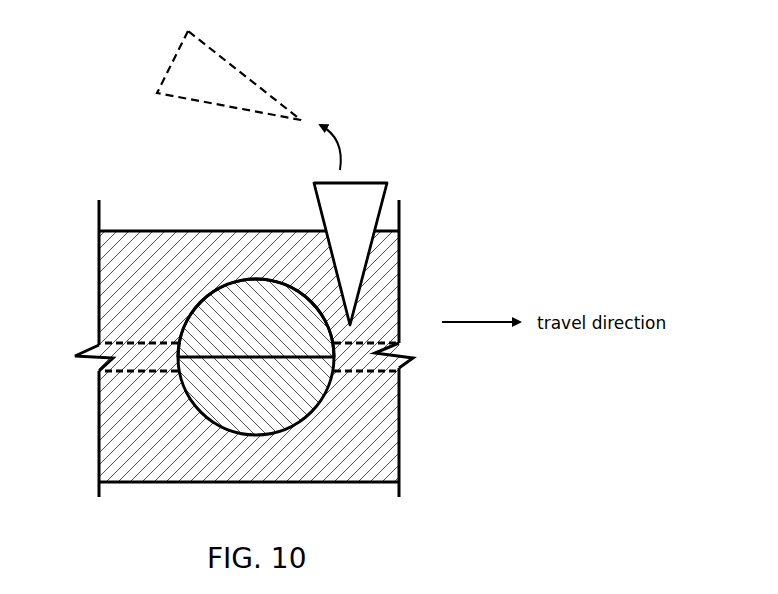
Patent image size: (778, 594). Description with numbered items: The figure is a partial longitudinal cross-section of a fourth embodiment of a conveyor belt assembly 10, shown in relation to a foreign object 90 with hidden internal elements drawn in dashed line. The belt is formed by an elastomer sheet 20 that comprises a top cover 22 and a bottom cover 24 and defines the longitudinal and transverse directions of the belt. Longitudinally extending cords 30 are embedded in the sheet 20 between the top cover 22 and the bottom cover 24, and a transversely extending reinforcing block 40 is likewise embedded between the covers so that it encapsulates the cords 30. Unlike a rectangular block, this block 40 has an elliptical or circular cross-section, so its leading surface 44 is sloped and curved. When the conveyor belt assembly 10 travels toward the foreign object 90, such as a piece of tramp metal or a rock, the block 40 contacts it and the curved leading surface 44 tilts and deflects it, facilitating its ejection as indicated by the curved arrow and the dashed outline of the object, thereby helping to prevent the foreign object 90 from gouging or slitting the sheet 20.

The conveyor belt assembly 10 is at (58, 264).
The elastomer sheet 20 is at (127, 230).
The top cover 22 is at (183, 243).
The bottom cover 24 is at (160, 470).
The cords 30 is at (133, 330).
The reinforcing block 40 is at (244, 280).
The leading surface 44 is at (287, 282).
The foreign object 90 is at (370, 182).